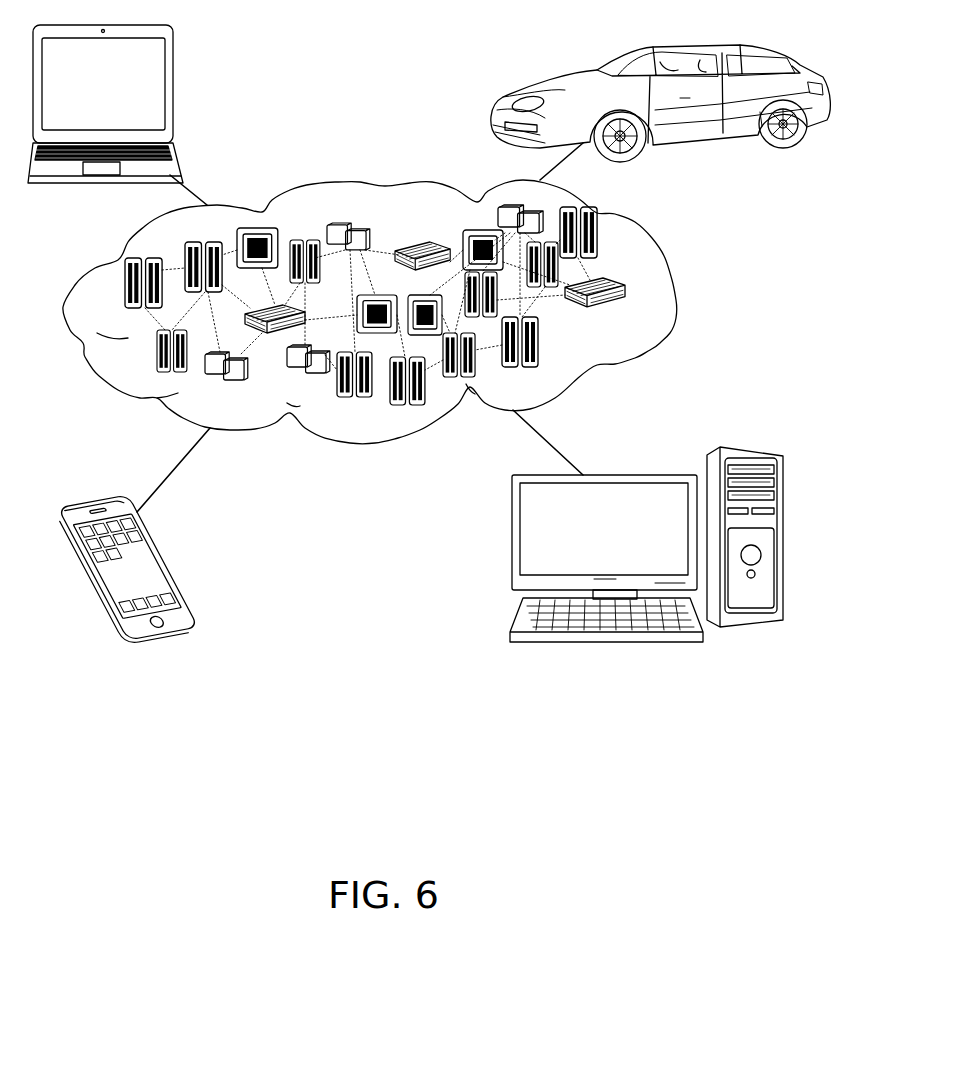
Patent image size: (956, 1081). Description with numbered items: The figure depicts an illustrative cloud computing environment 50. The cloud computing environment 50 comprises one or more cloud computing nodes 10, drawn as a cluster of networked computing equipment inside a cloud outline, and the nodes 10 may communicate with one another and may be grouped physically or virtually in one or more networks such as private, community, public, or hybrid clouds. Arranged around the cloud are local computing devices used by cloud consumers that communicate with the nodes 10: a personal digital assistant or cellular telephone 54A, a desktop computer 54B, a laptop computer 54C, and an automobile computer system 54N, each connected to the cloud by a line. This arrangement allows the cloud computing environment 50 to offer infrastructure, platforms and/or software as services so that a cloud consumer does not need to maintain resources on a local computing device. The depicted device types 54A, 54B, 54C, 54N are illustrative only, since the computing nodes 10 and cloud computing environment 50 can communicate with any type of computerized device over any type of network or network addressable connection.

The cloud computing node 10 is at (624, 300).
The cloud computing environment 50 is at (394, 312).
The personal digital assistant or cellular telephone 54A is at (150, 557).
The desktop computer 54B is at (687, 458).
The laptop computer 54C is at (153, 102).
The automobile computer system 54N is at (497, 110).